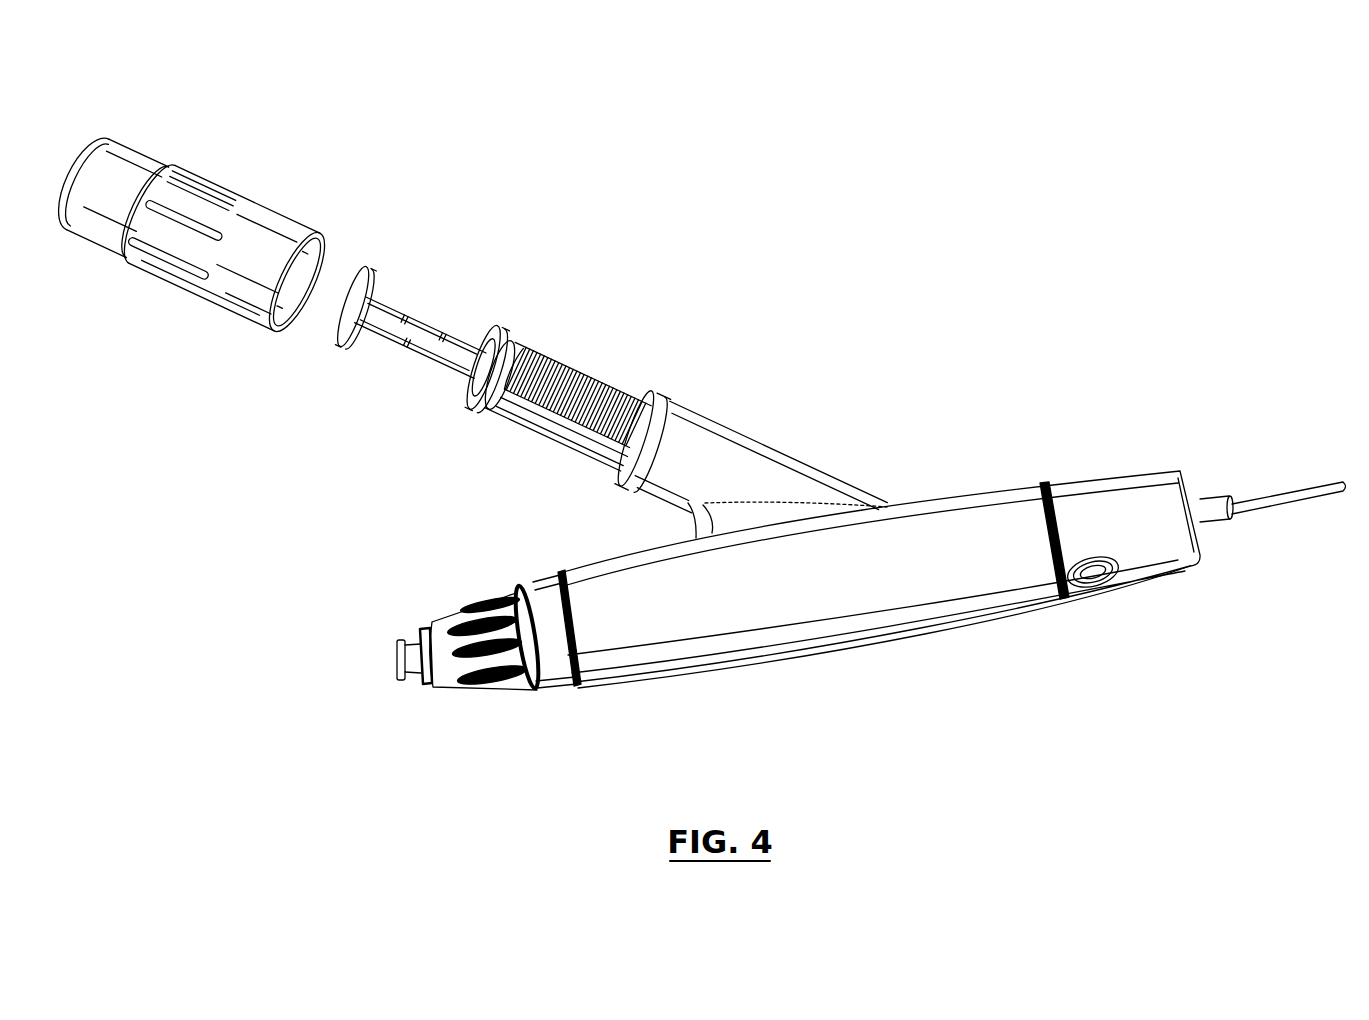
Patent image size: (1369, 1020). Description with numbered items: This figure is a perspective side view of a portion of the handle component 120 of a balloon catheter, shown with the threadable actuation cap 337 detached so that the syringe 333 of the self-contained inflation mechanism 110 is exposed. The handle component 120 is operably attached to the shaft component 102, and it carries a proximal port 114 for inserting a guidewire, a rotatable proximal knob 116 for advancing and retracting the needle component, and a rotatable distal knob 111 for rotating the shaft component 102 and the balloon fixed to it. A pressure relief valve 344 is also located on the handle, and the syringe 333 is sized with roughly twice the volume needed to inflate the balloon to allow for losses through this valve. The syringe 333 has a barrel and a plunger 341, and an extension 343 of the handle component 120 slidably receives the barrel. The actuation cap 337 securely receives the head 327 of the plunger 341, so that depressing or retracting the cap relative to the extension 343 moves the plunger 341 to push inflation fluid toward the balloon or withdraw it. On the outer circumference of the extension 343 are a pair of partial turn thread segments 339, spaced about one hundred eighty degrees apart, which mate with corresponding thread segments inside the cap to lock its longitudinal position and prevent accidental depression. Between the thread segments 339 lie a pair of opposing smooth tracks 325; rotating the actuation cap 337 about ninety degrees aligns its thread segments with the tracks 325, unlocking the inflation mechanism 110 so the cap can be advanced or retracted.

The self-contained inflation mechanism 110 is at (303, 56).
The actuation cap 337 is at (277, 217).
The head 327 is at (355, 308).
The plunger 341 is at (420, 337).
The syringe 333 is at (487, 369).
The tracks 325 is at (575, 410).
The partial turn thread segments 339 is at (575, 397).
The handle component 120 is at (807, 288).
The extension 343 is at (743, 423).
The rotatable distal knob 111 is at (1113, 474).
The pressure relief valve 344 is at (1093, 590).
The shaft component 102 is at (1291, 483).
The proximal port 114 is at (378, 665).
The rotatable proximal knob 116 is at (492, 690).